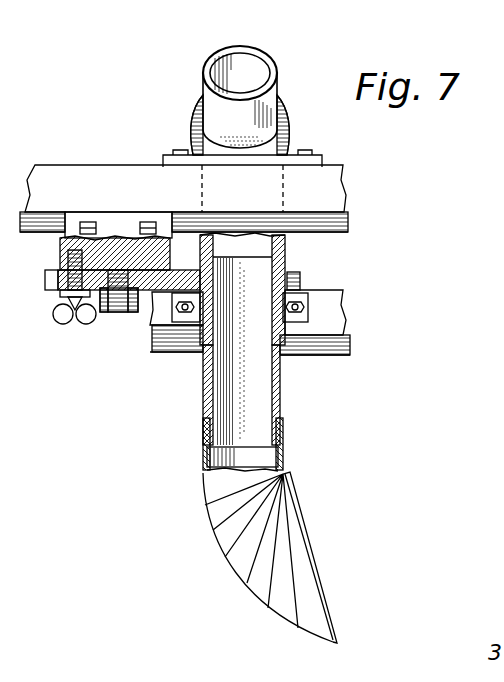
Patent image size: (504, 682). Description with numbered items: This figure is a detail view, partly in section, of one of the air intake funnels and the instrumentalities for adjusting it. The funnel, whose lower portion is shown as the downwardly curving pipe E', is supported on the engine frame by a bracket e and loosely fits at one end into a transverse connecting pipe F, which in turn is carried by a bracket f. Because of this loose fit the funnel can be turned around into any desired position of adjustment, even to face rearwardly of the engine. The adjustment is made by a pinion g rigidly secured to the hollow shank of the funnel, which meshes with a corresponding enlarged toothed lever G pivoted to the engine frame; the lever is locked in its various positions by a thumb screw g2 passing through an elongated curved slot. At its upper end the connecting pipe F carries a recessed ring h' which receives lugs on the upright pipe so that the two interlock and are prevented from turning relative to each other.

The transverse connecting pipe F is at (239, 62).
The recessed ring h' is at (240, 127).
The bracket f is at (184, 198).
The toothed lever G is at (47, 281).
The pinion g is at (300, 277).
The thumb screw g2 is at (75, 323).
The bracket e is at (323, 312).
The discharge tube with elbow E' is at (268, 438).